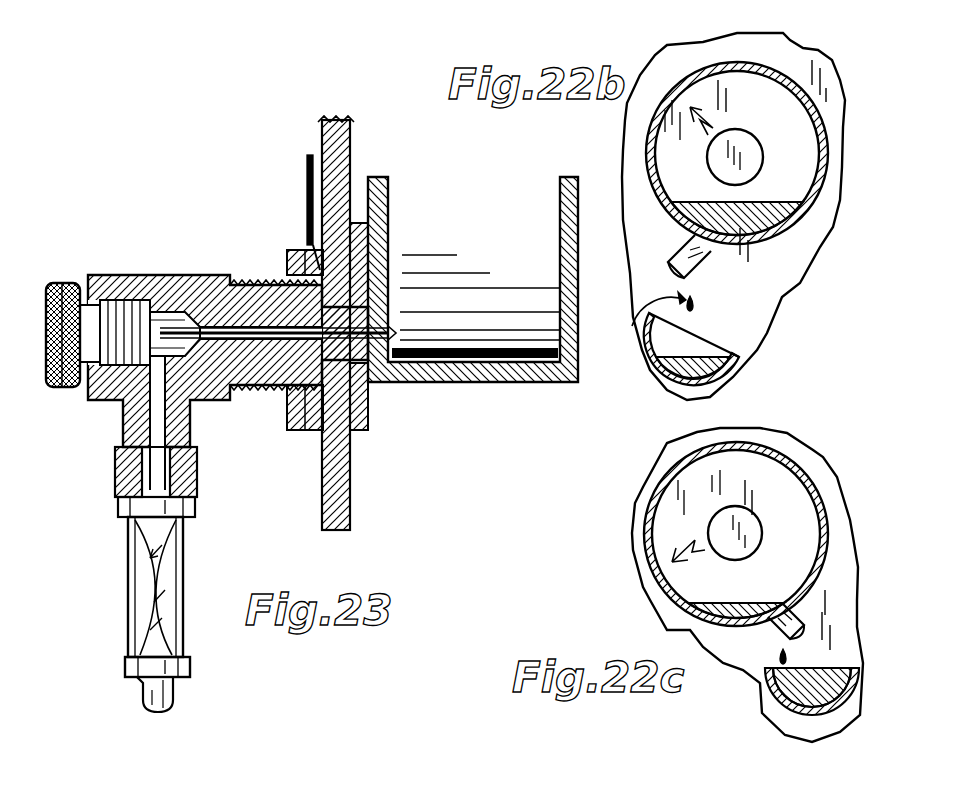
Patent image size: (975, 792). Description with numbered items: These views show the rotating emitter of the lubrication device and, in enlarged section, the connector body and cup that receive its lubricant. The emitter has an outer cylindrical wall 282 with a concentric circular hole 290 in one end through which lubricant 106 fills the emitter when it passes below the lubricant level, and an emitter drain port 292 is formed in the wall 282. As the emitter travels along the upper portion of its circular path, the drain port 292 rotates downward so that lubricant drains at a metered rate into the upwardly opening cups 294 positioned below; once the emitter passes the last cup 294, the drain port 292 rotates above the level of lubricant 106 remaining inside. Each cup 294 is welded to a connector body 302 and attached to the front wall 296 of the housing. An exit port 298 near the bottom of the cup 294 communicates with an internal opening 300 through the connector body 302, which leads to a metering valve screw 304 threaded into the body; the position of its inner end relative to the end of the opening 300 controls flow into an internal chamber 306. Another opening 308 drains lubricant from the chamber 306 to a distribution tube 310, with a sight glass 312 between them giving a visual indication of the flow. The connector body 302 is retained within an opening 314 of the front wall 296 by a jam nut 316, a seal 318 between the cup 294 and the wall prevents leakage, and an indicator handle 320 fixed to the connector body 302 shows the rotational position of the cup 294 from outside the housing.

In FIG. 22B, the lubricant 106 is at (692, 205).
In FIG. 22C, the lubricant 106 is at (705, 604).
In FIG. 22B, the outer cylindrical wall 282 is at (646, 128).
In FIG. 22C, the outer cylindrical wall 282 is at (820, 418).
In FIG. 22B, the circular hole 290 is at (730, 132).
In FIG. 22C, the circular hole 290 is at (727, 517).
In FIG. 22B, the emitter drain port 292 is at (722, 240).
In FIG. 22C, the emitter drain port 292 is at (780, 610).
In FIG. 23, the cup 294 is at (466, 177).
In FIG. 22B, the cup 294 is at (727, 362).
In FIG. 22C, the cup 294 is at (765, 682).
In FIG. 23, the front wall 296 is at (343, 124).
In FIG. 23, the exit port 298 is at (386, 334).
In FIG. 22B, the exit port 298 is at (660, 355).
In FIG. 22C, the exit port 298 is at (782, 712).
In FIG. 23, the internal opening 300 is at (270, 345).
In FIG. 23, the connector body 302 is at (200, 284).
In FIG. 23, the metering valve screw 304 is at (92, 398).
In FIG. 23, the internal chamber 306 is at (182, 330).
In FIG. 23, the opening 308 is at (156, 440).
In FIG. 23, the distribution tube 310 is at (145, 695).
In FIG. 23, the sight glass 312 is at (155, 568).
In FIG. 23, the opening 314 is at (352, 385).
In FIG. 23, the jam nut 316 is at (300, 254).
In FIG. 23, the seal 318 is at (352, 450).
In FIG. 23, the indicator handle 320 is at (308, 160).